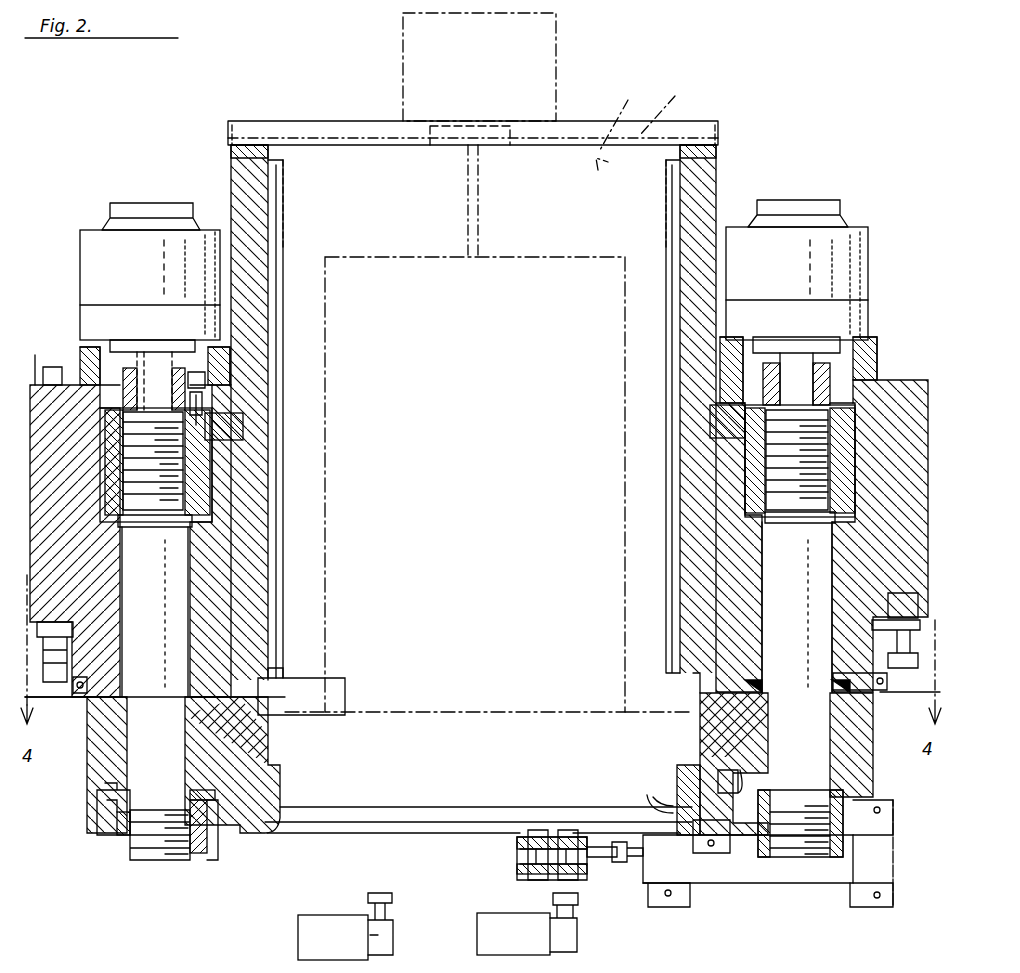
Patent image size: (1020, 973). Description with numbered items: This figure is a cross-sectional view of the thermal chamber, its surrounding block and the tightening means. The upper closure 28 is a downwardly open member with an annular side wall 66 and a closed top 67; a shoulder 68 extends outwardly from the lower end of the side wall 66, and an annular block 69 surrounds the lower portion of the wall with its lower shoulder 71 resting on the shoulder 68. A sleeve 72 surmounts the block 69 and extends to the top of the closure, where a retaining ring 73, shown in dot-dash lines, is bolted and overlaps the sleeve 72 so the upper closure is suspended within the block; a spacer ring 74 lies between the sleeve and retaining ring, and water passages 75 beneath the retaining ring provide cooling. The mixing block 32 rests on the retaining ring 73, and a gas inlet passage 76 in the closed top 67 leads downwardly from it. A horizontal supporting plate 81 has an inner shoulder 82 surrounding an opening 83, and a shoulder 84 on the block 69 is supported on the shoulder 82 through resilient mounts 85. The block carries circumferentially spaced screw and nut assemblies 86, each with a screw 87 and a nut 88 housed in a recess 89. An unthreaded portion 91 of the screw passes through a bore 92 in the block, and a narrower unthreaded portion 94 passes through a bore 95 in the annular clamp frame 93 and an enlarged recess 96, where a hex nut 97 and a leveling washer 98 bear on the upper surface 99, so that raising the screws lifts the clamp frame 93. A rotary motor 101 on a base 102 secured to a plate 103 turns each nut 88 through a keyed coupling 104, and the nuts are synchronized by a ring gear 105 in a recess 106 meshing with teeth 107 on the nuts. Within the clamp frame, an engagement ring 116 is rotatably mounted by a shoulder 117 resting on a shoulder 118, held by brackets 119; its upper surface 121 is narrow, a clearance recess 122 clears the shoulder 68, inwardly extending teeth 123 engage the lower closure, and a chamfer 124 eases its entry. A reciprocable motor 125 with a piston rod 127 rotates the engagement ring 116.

The upper closure 28 is at (675, 96).
The mixing block 32 is at (566, 38).
The annular side wall 66 is at (625, 405).
The closed top 67 is at (590, 252).
The shoulder 68 is at (698, 662).
The annular block 69 is at (258, 570).
The lower shoulder 71 is at (283, 690).
The sleeve 72 is at (262, 300).
The retaining ring 73 is at (640, 98).
The spacer ring 74 is at (720, 150).
The water passages 75 is at (335, 122).
The gas inlet passage 76 is at (478, 262).
The horizontal supporting plate 81 is at (130, 522).
The inner shoulder 82 is at (108, 636).
The opening 83 is at (115, 666).
The shoulder 84 is at (52, 622).
The resilient mounts 85 is at (110, 600).
The screw and nut assemblies 86 is at (90, 516).
The screw 87 is at (760, 490).
The nut 88 is at (745, 478).
The recess 89 is at (98, 464).
The unthreaded portion 91 is at (775, 575).
The bore 92 is at (200, 648).
The annular clamp frame 93 is at (850, 735).
The unthreaded portion 94 is at (225, 766).
The bore 95 is at (190, 742).
The enlarged recess 96 is at (107, 842).
The hex nut 97 is at (197, 853).
The leveling washer 98 is at (218, 860).
The upper surface 99 is at (190, 793).
The rotary motor 101 is at (92, 262).
The base 102 is at (100, 345).
The plate 103 is at (46, 356).
The keyed coupling 104 is at (200, 382).
The ring gear 105 is at (185, 395).
The recess 106 is at (240, 430).
The teeth 107 is at (100, 427).
The engagement ring 116 is at (700, 728).
The shoulder 117 is at (735, 778).
The shoulder 118 is at (677, 775).
The brackets 119 is at (290, 840).
The upper surface 121 is at (755, 668).
The clearance recess 122 is at (695, 680).
The teeth 123 is at (340, 760).
The chamfer 124 is at (647, 795).
The reciprocable motor 125 is at (800, 883).
The piston rod 127 is at (616, 862).